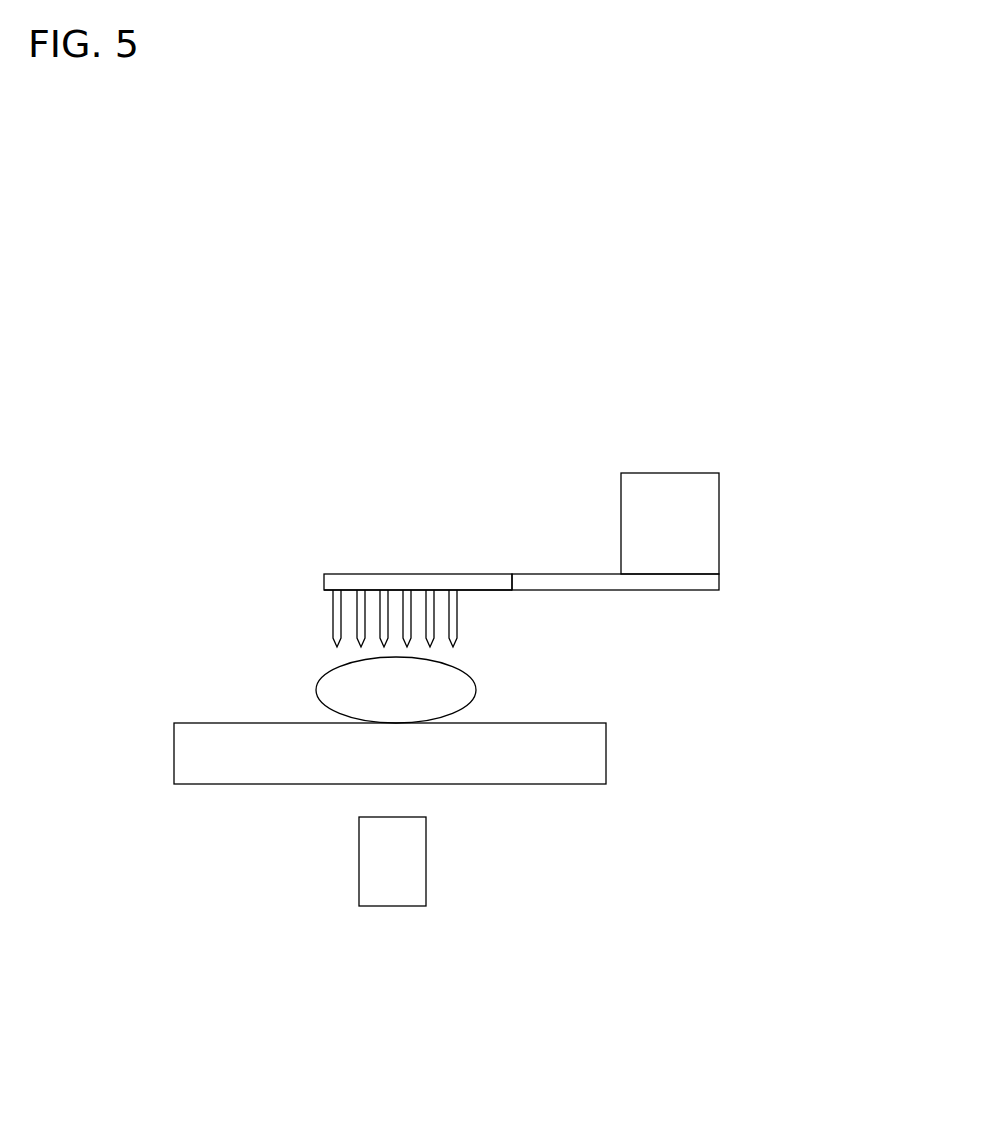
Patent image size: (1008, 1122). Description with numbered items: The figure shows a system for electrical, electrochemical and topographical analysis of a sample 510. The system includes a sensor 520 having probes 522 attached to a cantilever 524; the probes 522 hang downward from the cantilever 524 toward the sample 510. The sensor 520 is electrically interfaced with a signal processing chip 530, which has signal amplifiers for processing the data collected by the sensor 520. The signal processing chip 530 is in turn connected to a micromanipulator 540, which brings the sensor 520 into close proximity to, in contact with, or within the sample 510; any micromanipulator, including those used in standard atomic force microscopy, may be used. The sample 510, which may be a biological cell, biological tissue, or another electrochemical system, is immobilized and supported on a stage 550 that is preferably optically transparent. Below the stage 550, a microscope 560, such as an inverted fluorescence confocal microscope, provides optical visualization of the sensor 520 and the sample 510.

The sample 510 is at (328, 668).
The sensor 520 is at (441, 559).
The probes 522 is at (478, 624).
The cantilever 524 is at (383, 574).
The signal processing chip 530 is at (677, 592).
The micromanipulator 540 is at (686, 473).
The stage 550 is at (201, 723).
The microscope 560 is at (426, 865).